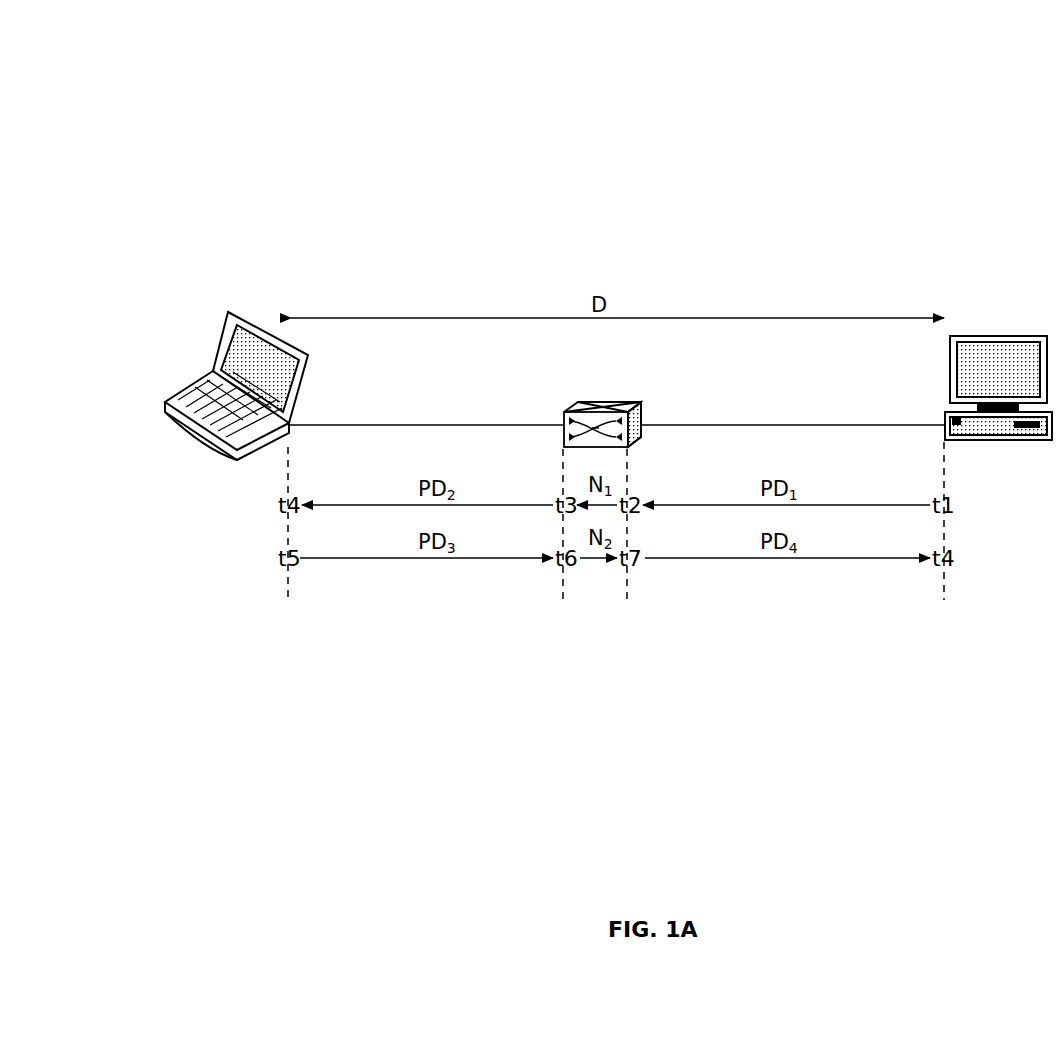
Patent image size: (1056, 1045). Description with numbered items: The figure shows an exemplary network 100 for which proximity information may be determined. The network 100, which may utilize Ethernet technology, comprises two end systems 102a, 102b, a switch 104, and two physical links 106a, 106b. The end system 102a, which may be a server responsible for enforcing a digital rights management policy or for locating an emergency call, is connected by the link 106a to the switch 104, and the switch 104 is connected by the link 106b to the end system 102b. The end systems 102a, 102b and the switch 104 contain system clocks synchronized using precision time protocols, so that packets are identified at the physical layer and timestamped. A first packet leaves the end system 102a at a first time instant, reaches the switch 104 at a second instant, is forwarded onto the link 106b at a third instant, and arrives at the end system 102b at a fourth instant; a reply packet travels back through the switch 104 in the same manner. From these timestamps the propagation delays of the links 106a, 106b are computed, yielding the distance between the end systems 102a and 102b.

The network 100 is at (298, 170).
The end system 102a is at (990, 334).
The end system 102b is at (256, 320).
The switch 104 is at (601, 401).
The physical link 106a is at (782, 424).
The physical link 106b is at (404, 424).